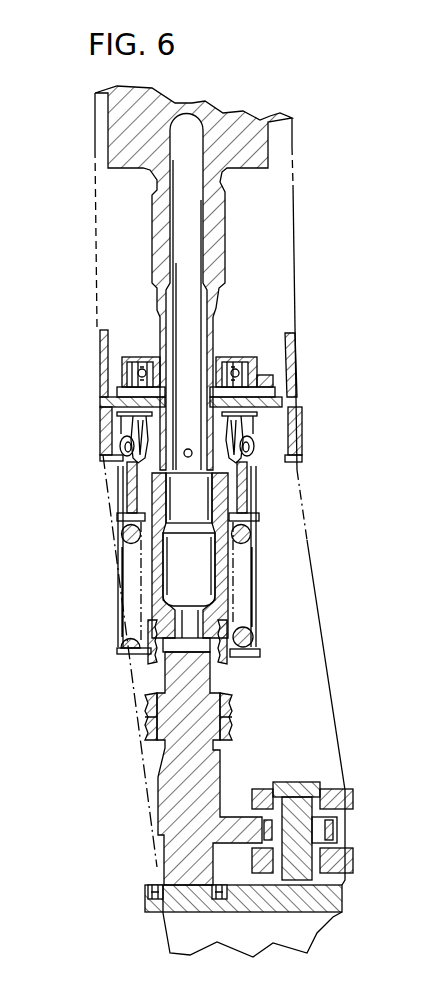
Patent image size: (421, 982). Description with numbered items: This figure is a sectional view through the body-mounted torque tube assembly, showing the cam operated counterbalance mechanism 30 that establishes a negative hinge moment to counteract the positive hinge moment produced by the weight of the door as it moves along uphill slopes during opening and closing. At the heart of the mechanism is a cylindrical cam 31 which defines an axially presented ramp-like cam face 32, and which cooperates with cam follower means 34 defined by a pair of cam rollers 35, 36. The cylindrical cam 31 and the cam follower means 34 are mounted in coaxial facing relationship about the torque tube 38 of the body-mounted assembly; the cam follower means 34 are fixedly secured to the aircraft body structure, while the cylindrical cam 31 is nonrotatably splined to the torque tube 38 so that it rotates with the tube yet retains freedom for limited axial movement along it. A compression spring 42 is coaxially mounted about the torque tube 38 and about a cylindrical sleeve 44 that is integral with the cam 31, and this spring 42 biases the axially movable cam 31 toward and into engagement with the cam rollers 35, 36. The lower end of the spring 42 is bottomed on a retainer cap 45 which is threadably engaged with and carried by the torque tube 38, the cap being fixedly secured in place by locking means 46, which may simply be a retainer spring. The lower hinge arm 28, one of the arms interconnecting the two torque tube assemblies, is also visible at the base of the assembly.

The lower hinge arm 28 is at (345, 790).
The counterbalance mechanism 30 is at (292, 545).
The cylindrical cam 31 is at (248, 496).
The cam face 32 is at (122, 460).
The cam follower means 34 is at (266, 432).
The cam roller 35 is at (122, 449).
The cam roller 36 is at (254, 453).
The torque tube 38 is at (210, 741).
The compression spring 42 is at (254, 641).
The cylindrical sleeve 44 is at (230, 584).
The retainer cap 45 is at (262, 654).
The locking means 46 is at (233, 664).